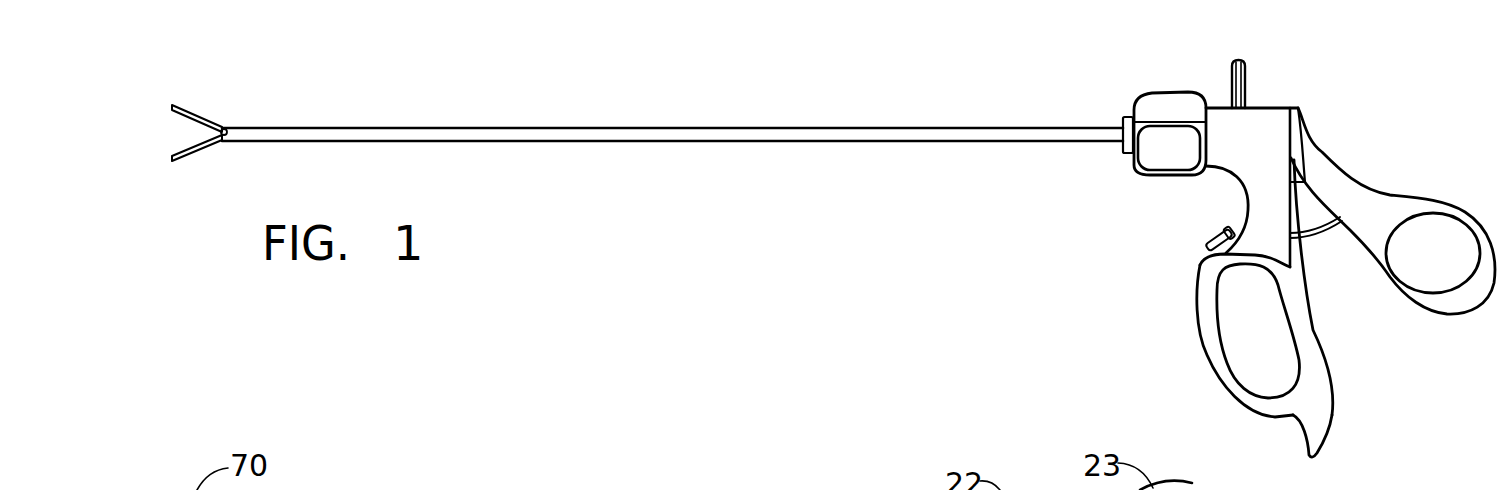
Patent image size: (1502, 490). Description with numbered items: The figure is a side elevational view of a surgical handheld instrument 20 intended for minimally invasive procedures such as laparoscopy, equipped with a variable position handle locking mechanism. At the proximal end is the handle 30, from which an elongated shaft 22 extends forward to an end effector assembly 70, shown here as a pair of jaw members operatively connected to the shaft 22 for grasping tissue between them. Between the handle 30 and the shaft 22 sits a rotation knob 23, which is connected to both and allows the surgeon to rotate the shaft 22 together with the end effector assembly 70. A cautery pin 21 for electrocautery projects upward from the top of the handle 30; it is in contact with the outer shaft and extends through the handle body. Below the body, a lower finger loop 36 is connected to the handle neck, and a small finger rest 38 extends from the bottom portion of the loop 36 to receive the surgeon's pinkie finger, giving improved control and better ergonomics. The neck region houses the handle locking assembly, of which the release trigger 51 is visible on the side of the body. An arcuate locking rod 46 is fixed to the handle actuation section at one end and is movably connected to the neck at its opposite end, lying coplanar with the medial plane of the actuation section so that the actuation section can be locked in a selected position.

The surgical handheld instrument 20 is at (1060, 313).
The cautery pin 21 is at (1248, 84).
The elongated shaft 22 is at (722, 132).
The rotation knob 23 is at (1160, 157).
The handle 30 is at (1345, 150).
The lower finger loop 36 is at (1202, 328).
The small finger rest 38 is at (1303, 442).
The arcuate locking rod 46 is at (1312, 240).
The release trigger 51 is at (1208, 240).
The end effector assembly 70 is at (200, 112).